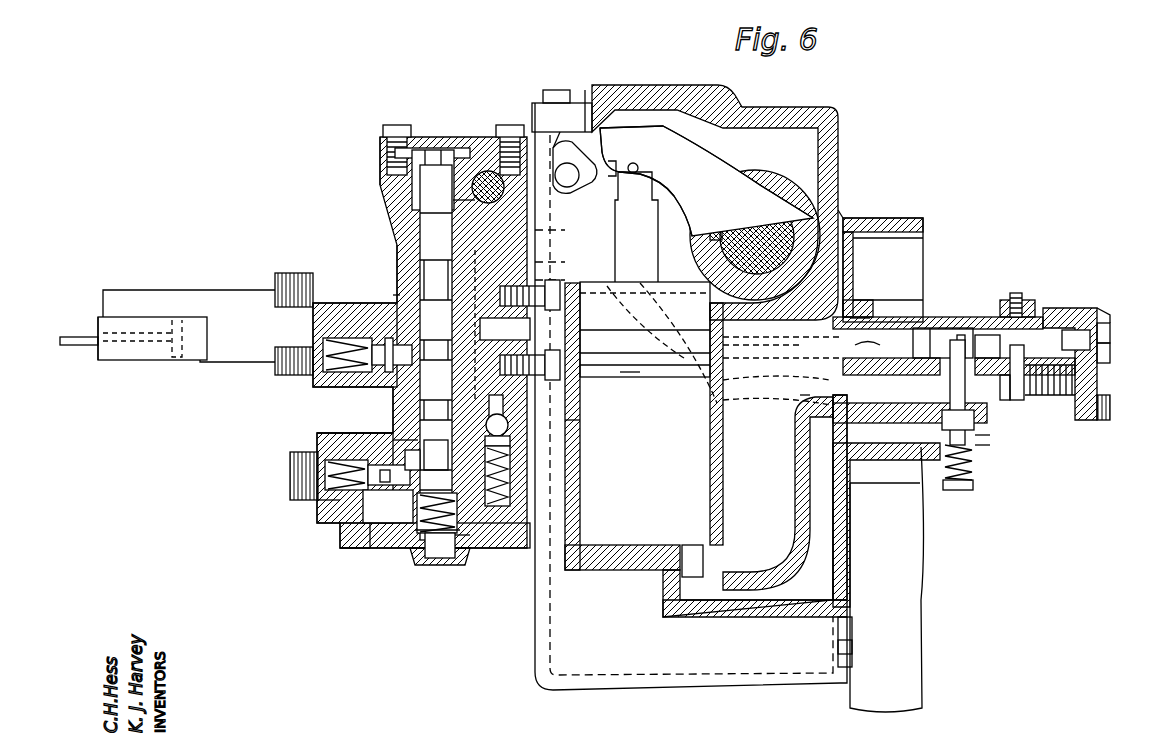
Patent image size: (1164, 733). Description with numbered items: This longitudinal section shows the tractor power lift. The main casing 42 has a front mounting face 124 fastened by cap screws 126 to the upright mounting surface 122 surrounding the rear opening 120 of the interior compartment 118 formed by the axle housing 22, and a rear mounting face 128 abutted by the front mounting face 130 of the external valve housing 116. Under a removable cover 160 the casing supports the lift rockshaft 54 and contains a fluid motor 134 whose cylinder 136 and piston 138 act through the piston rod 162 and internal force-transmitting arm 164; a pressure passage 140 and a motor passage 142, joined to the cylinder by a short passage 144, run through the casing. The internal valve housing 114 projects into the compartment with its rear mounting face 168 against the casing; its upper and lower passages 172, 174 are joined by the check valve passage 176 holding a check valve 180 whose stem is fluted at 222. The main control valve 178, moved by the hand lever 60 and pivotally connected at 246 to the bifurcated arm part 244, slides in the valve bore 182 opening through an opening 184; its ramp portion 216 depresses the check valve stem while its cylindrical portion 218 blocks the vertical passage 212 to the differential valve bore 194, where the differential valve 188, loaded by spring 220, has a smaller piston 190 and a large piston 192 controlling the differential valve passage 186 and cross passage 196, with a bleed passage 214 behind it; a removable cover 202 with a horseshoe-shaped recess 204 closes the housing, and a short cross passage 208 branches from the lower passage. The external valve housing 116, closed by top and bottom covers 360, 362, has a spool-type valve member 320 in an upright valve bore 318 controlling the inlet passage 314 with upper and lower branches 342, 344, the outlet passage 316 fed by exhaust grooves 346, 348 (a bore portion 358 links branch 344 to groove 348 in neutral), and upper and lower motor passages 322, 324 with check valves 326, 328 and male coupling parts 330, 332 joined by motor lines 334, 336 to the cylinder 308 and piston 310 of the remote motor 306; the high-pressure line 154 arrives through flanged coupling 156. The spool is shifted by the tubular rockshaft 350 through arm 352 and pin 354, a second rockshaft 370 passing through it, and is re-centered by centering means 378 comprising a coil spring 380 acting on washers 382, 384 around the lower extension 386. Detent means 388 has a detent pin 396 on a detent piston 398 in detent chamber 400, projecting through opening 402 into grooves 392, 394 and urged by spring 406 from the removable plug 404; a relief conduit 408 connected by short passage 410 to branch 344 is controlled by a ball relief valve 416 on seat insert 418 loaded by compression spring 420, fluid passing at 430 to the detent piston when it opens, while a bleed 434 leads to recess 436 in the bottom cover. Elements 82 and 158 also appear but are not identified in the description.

The axle housing 22 is at (922, 685).
The main casing 42 is at (540, 668).
The lift rockshaft 54 is at (772, 200).
The hand lever 60 is at (588, 136).
The pivot bushing 82 is at (568, 188).
The internal valve housing 114 is at (1070, 299).
The external valve housing 116 is at (364, 167).
The interior compartment 118 is at (935, 245).
The rear opening 120 is at (860, 262).
The upright mounting surface 122 is at (853, 215).
The front mounting face 124 is at (852, 650).
The cap screws 126 is at (835, 645).
The rear mounting face 128 is at (520, 560).
The front mounting face 130 is at (580, 408).
The fluid motor 134 is at (735, 380).
The cylinder 136 is at (723, 433).
The piston 138 is at (633, 373).
The pressure passage 140 is at (800, 395).
The motor passage 142 is at (736, 578).
The short passage 144 is at (694, 546).
The high-pressure line 154 is at (580, 337).
The flanged coupling 156 is at (566, 282).
The passage 158 is at (608, 286).
The removable cover 160 is at (712, 87).
The piston rod 162 is at (615, 220).
The internal force-transmitting arm 164 is at (724, 166).
The rear mounting face 168 is at (858, 318).
The upper passage 172 is at (868, 397).
The lower passage 174 is at (905, 475).
The check valve passage 176 is at (948, 400).
The main control valve 178 is at (892, 326).
The check valve 180 is at (992, 485).
The valve bore 182 is at (962, 332).
The opening 184 is at (842, 312).
The differential valve passage 186 is at (975, 338).
The differential valve 188 is at (1102, 360).
The smaller piston portion 190 is at (1005, 440).
The large piston portion 192 is at (1008, 402).
The differential valve bore 194 is at (1104, 400).
The cross passage 196 is at (1000, 358).
The removable cover 202 is at (1092, 310).
The horseshoe-shaped recess 204 is at (1075, 340).
The short cross passage 208 is at (920, 460).
The short vertical passage 212 is at (1026, 352).
The bleed passage 214 is at (1008, 430).
The ramp portion 216 is at (876, 346).
The cylindrical portion 218 is at (985, 327).
The valve-loading spring 220 is at (1100, 340).
The fluted portion 222 is at (940, 330).
The depending arm part 244 is at (740, 340).
The pivotal connection 246 is at (694, 303).
The remote motor 306 is at (162, 370).
The cylinder 308 is at (96, 320).
The piston 310 is at (78, 346).
The fluid inlet passage 314 is at (532, 337).
The outlet passage 316 is at (505, 232).
The upright valve bore 318 is at (398, 255).
The spool-type valve member 320 is at (415, 225).
The upper motor passage 322 is at (395, 300).
The lower motor passage 324 is at (400, 355).
The upper check valve 326 is at (345, 305).
The lower check valve 328 is at (352, 338).
The male coupling part 330 is at (298, 272).
The male coupling part 332 is at (290, 375).
The motor line 334 is at (240, 275).
The motor line 336 is at (220, 362).
The upper inlet branch 342 is at (470, 203).
The lower inlet branch 344 is at (528, 390).
The upper exhaust groove 346 is at (398, 338).
The lower exhaust groove 348 is at (372, 418).
The rockshaft 350 is at (490, 172).
The arm 352 is at (458, 160).
The pin 354 is at (432, 170).
The valve bore portion 358 is at (395, 405).
The top cover 360 is at (385, 137).
The bottom cover 362 is at (350, 552).
The second valve control rockshaft 370 is at (598, 214).
The centering means 378 is at (425, 560).
The coil spring 380 is at (465, 560).
The upper washer 382 is at (470, 548).
The lower washer 384 is at (448, 572).
The lower extension 386 is at (422, 535).
The detent means 388 is at (288, 455).
The upper detent groove 392 is at (436, 448).
The lower detent groove 394 is at (395, 500).
The detent pin 396 is at (418, 452).
The detent piston 398 is at (355, 448).
The detent chamber 400 is at (320, 492).
The opening 402 is at (398, 482).
The removable plug 404 is at (298, 476).
The spring 406 is at (325, 505).
The relief conduit 408 is at (512, 446).
The short passage 410 is at (505, 410).
The first relief valve 416 is at (510, 427).
The seat insert 418 is at (580, 420).
The coiled compression spring 420 is at (510, 495).
The communication passage 430 is at (395, 445).
The bleed 434 is at (340, 535).
The recess 436 is at (370, 550).